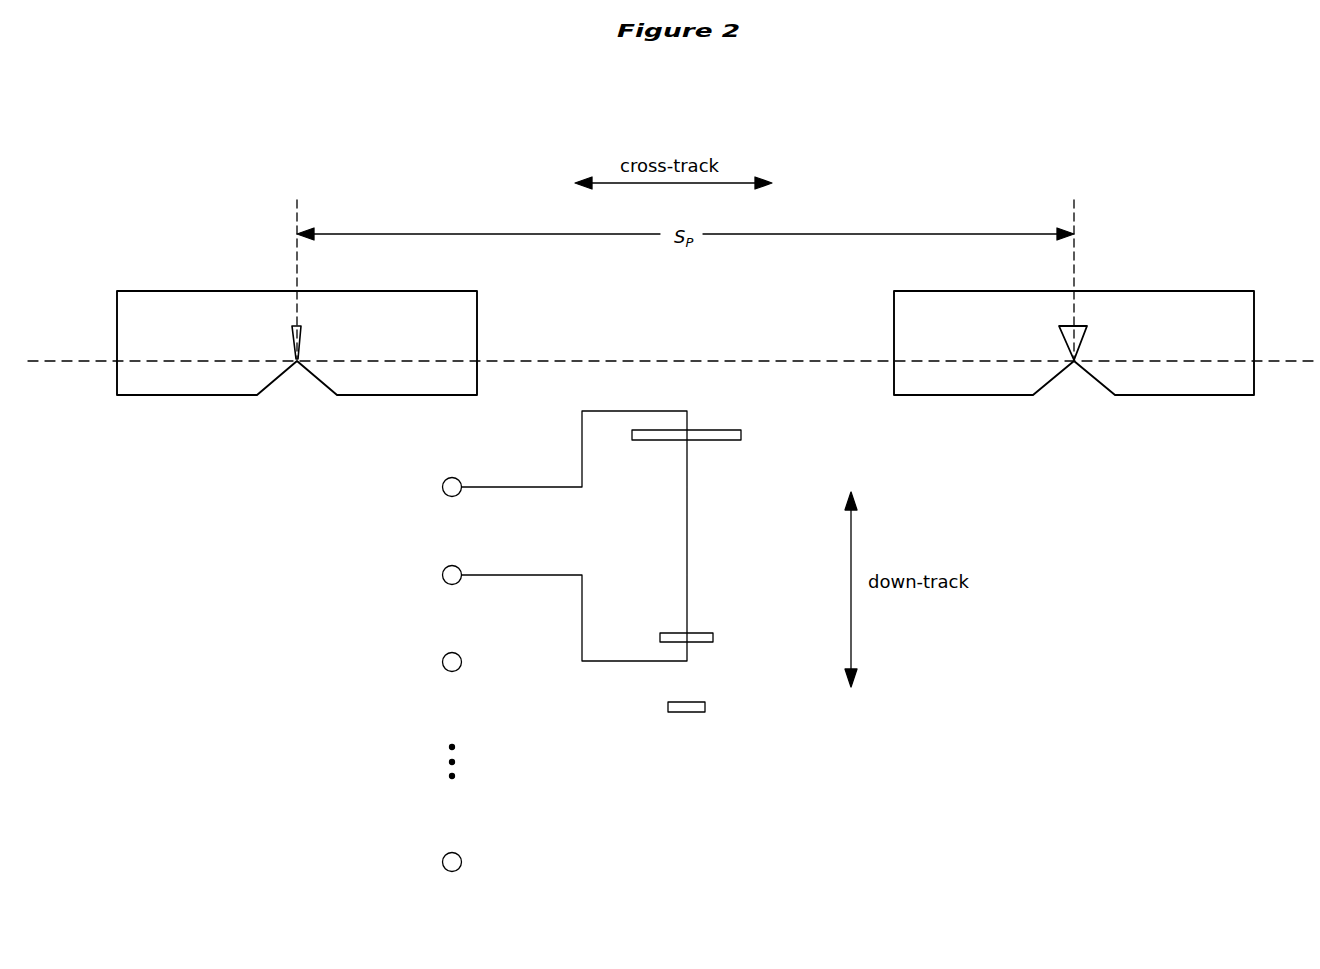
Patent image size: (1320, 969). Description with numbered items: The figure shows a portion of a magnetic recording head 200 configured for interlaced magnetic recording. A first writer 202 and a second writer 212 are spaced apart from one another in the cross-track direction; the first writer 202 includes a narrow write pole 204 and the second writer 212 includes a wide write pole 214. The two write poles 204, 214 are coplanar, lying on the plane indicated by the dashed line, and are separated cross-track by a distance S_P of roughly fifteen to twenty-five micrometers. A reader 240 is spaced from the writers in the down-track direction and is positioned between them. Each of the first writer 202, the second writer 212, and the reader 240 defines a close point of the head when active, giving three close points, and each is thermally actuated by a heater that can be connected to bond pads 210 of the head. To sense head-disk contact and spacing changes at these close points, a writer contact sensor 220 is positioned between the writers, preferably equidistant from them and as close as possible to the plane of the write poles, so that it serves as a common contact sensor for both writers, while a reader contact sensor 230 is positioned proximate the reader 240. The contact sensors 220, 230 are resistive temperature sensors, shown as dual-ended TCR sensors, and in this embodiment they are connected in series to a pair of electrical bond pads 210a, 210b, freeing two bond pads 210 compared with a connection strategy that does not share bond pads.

The magnetic recording head 200 is at (981, 159).
The first writer 202 is at (163, 395).
The narrow write pole 204 is at (300, 342).
The second writer 212 is at (978, 395).
The wide write pole 214 is at (1082, 341).
The bond pads 210 is at (367, 672).
The bond pad 210a is at (443, 485).
The bond pad 210b is at (443, 573).
The writer contact sensor 220 is at (727, 441).
The reader contact sensor 230 is at (714, 637).
The reader 240 is at (706, 707).